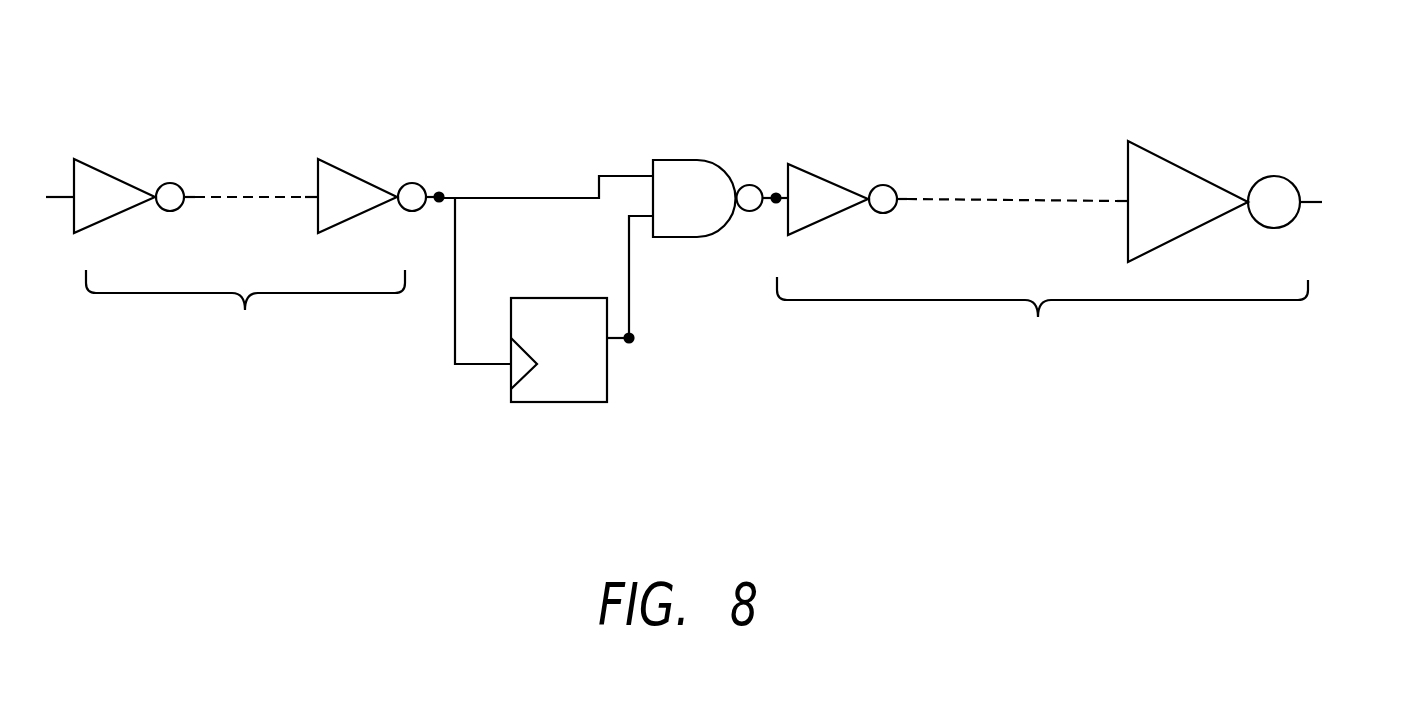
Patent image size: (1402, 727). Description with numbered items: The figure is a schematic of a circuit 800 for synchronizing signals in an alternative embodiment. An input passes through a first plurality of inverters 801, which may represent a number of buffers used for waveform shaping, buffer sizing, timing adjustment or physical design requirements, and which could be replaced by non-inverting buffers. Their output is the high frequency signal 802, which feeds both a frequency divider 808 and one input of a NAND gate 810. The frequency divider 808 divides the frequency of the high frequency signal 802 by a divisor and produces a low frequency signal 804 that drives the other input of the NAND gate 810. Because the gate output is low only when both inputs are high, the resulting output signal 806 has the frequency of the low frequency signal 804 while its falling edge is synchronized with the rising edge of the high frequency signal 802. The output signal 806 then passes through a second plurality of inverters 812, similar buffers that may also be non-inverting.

The circuit 800 is at (752, 27).
The first plurality of inverters 801 is at (243, 138).
The high frequency signal 802 is at (439, 194).
The low frequency signal 804 is at (629, 341).
The output signal 806 is at (776, 196).
The frequency divider 808 is at (580, 337).
The NAND gate 810 is at (668, 160).
The second plurality of inverters 812 is at (1007, 157).